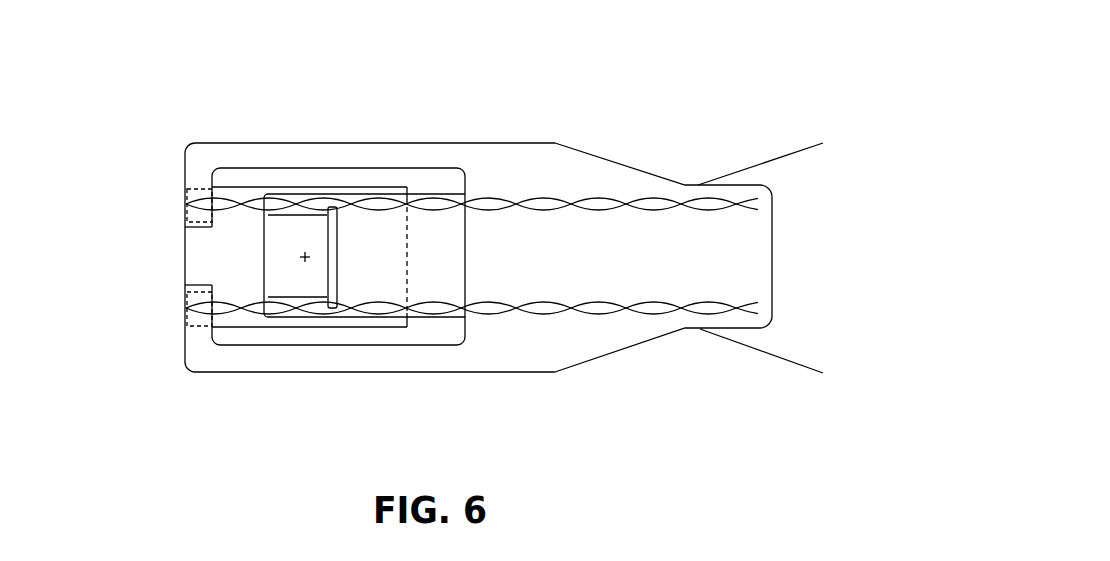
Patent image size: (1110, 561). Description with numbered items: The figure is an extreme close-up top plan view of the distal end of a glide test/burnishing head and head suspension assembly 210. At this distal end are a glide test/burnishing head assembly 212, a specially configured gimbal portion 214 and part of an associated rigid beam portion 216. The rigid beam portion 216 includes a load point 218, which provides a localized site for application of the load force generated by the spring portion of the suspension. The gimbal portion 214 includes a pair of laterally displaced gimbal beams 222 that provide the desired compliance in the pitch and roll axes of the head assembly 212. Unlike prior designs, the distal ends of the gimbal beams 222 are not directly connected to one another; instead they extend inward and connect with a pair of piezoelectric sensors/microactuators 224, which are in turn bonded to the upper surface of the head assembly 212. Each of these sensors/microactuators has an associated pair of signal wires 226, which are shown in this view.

The glide test/burnishing head and head suspension assembly 210 is at (197, 102).
The glide test/burnishing head assembly 212 is at (220, 258).
The gimbal portion 214 is at (620, 350).
The rigid beam portion 216 is at (787, 178).
The load point 218 is at (300, 261).
The gimbal beams 222 is at (366, 153).
The piezoelectric sensors/microactuators 224 is at (195, 195).
The signal wires 226 is at (543, 198).